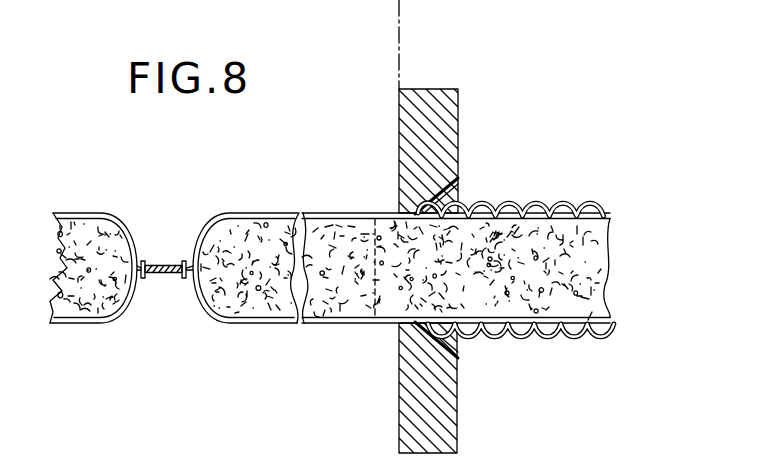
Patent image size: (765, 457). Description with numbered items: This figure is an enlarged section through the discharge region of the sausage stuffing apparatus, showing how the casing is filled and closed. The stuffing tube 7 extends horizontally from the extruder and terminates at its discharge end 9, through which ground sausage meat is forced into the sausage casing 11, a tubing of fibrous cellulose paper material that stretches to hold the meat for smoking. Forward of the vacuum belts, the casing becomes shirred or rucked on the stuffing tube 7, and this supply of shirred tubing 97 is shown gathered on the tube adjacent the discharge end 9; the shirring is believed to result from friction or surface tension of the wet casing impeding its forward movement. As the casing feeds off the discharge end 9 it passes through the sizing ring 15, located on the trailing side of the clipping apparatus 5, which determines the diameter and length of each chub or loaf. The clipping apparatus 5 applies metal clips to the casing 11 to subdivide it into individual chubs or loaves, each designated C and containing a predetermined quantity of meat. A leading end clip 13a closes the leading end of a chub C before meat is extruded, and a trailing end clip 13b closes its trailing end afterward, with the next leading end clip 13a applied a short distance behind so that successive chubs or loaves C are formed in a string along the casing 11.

The clipping apparatus 5 is at (400, 33).
The sizing ring 15 is at (458, 123).
The chub or loaf C is at (75, 213).
The leading end clip 13a is at (187, 279).
The trailing end clip 13b is at (143, 279).
The sausage casing 11 is at (250, 213).
The discharge end of stuffing tube 9 is at (368, 295).
The stuffing tube 7 is at (550, 297).
The shirred casing 97 is at (570, 198).